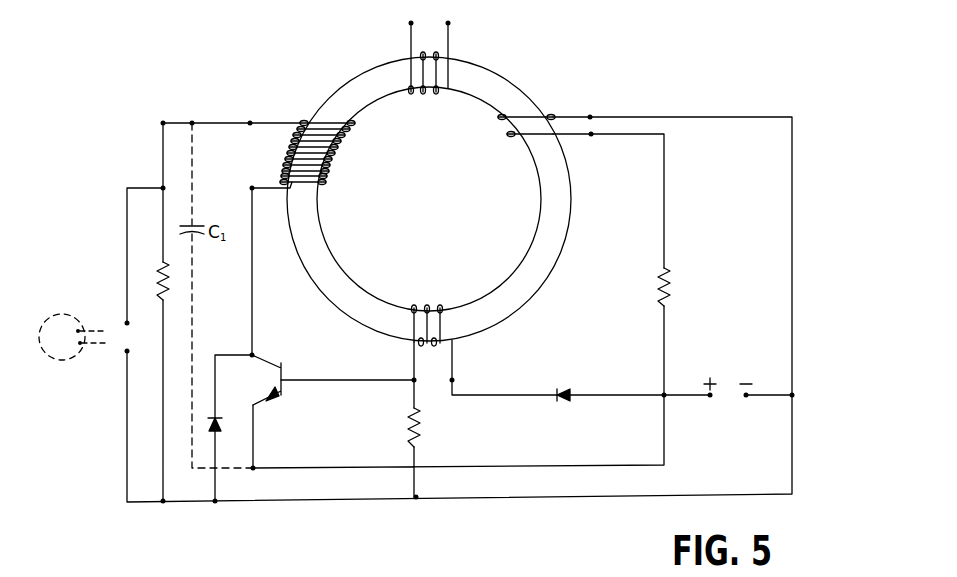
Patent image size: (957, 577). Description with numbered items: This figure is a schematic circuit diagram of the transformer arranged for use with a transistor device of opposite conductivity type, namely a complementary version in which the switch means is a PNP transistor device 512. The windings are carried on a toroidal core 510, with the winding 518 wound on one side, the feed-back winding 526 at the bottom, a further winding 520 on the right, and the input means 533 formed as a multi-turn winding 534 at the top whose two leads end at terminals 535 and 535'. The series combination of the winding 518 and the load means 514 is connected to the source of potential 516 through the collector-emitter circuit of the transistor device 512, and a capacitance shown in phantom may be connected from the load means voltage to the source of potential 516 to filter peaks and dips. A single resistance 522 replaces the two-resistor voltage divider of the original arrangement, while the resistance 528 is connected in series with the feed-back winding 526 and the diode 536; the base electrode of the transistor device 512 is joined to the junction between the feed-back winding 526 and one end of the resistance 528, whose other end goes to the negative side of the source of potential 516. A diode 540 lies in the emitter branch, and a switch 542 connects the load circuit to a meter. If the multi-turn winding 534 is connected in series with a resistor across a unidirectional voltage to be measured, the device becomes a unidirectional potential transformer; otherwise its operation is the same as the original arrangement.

The toroidal magnetic core 510 is at (510, 87).
The transistor device 512 is at (284, 367).
The load means 514 is at (170, 288).
The source of potential 516 is at (724, 404).
The winding 518 is at (342, 152).
The feedback winding 520 is at (506, 134).
The single resistance 522 is at (678, 292).
The feed-back winding 526 is at (432, 305).
The resistance 528 is at (408, 432).
The input means 533 is at (431, 22).
The multi-turn winding 534 is at (426, 93).
The winding terminal 535 is at (386, 33).
The winding terminal 535' is at (476, 35).
The diode 536 is at (565, 389).
The diode 540 is at (222, 418).
The switch 542 is at (113, 324).